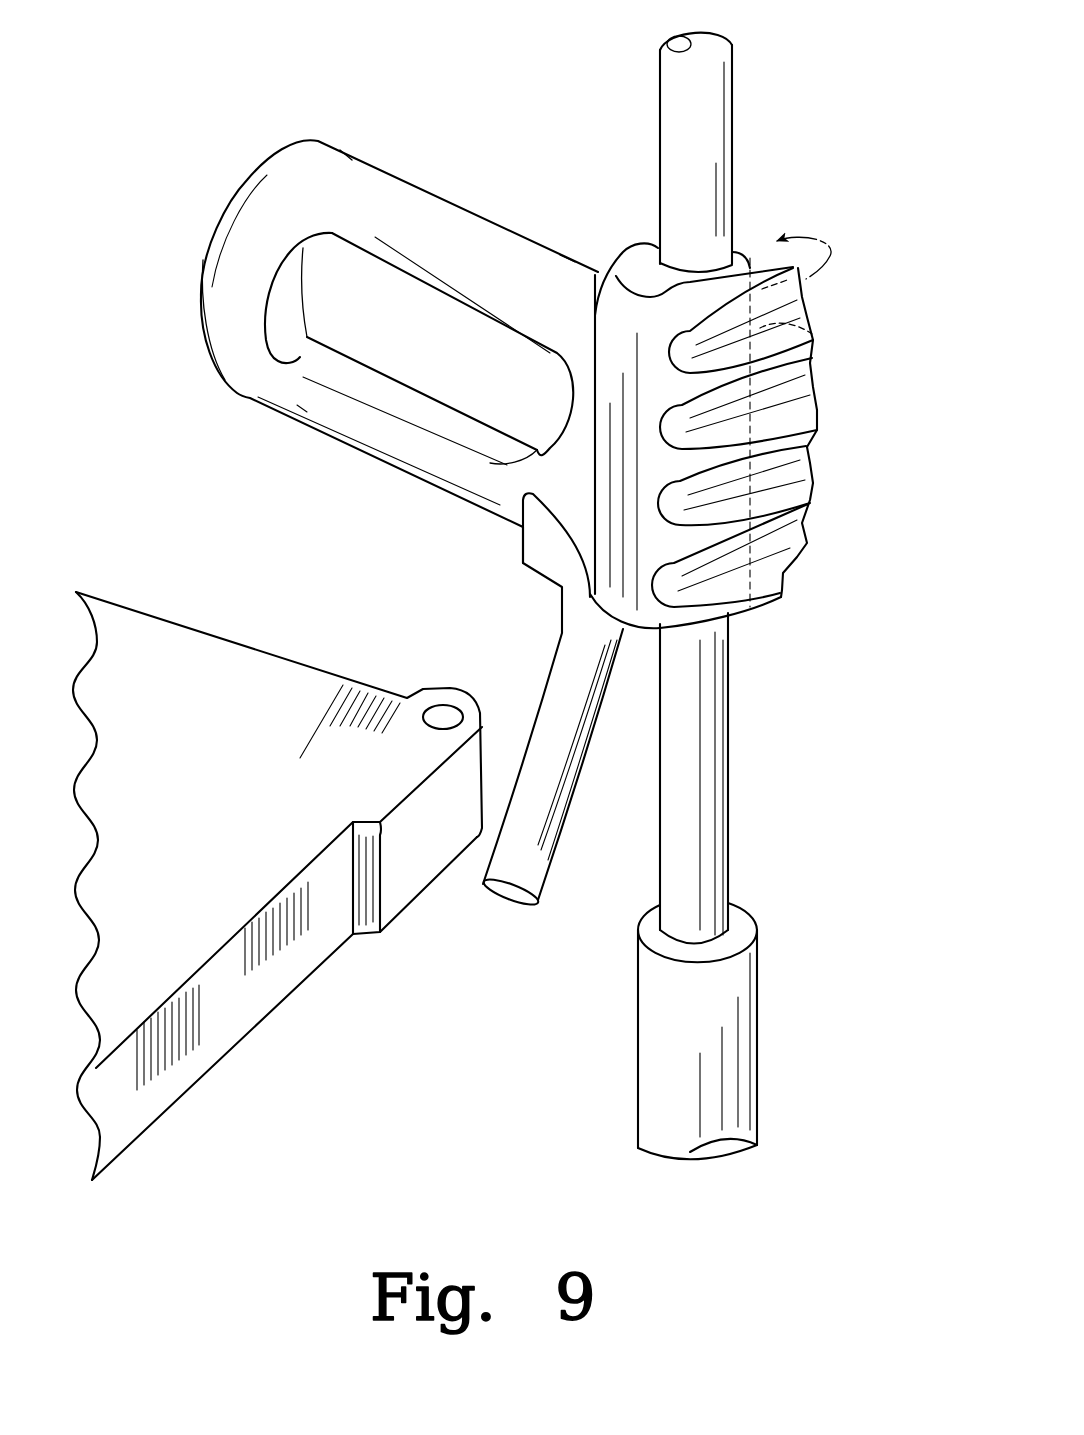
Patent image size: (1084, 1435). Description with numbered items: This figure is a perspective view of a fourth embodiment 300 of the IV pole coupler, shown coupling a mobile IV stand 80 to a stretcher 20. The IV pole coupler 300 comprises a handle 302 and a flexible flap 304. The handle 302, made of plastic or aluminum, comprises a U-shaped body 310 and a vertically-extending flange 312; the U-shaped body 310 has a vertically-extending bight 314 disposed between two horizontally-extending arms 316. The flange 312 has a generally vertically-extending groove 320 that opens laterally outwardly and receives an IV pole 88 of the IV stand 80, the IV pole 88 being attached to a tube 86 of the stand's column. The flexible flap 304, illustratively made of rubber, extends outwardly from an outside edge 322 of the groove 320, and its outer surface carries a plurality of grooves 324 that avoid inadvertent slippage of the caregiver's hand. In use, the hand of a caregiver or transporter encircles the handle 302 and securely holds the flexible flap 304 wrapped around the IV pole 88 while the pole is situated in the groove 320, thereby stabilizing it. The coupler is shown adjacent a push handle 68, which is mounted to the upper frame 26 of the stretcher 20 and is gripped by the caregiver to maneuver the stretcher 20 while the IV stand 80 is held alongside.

The fourth embodiment of the IV pole coupler 300 is at (514, 91).
The handle 302 is at (442, 203).
The flexible flap 304 is at (828, 507).
The U-shaped body 310 is at (207, 224).
The vertically-extending flange 312 is at (603, 447).
The vertically-extending bight 314 is at (209, 318).
The horizontally-extending arms 316 is at (352, 161).
The vertically-extending groove 320 is at (652, 247).
The outside edge of the groove 322 is at (812, 334).
The grooves 324 is at (798, 308).
The push handle 68 is at (533, 695).
The IV pole 88 is at (722, 763).
The mobile IV stand 80 is at (777, 958).
The tube 86 is at (760, 1033).
The stretcher 20 is at (149, 1157).
The upper frame 26 is at (236, 1014).